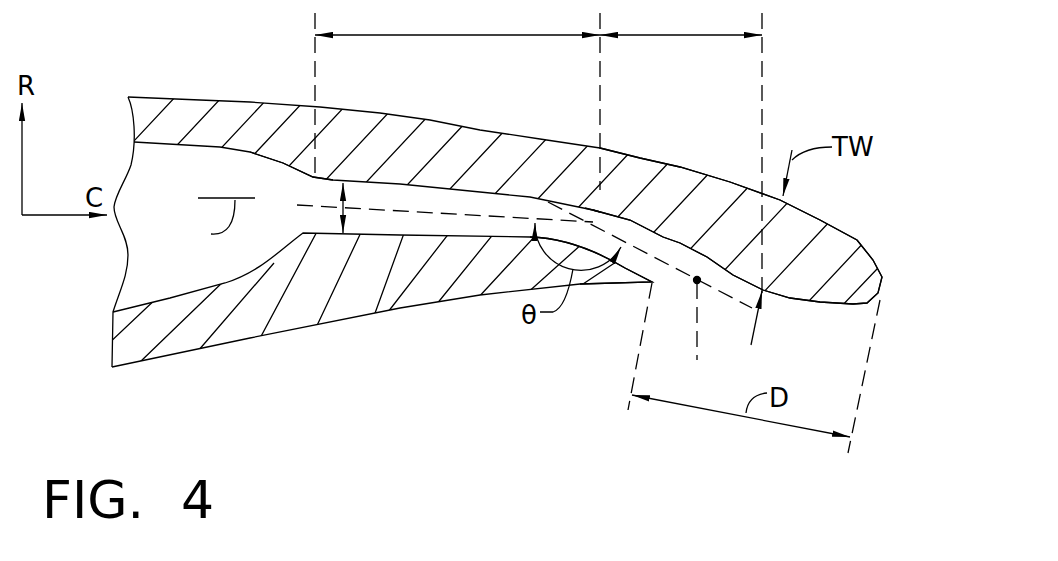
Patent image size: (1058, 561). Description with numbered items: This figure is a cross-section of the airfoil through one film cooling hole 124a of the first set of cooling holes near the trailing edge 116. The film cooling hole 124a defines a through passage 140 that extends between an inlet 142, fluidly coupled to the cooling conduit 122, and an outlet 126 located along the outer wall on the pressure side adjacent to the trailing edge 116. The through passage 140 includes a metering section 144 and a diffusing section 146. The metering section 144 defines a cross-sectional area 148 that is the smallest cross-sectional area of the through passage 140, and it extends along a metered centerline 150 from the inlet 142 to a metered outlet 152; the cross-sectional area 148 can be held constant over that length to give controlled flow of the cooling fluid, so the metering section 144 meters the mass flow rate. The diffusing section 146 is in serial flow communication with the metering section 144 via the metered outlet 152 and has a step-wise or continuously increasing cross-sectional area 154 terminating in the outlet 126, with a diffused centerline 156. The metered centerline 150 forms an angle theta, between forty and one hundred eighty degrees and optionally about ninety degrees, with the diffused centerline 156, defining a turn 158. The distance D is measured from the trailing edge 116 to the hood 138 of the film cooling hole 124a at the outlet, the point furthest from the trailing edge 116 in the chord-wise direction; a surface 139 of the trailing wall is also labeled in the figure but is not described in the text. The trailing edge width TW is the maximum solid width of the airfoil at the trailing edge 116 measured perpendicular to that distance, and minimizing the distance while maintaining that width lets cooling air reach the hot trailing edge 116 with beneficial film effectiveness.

The trailing edge 116 is at (882, 286).
The cooling conduit 122 is at (179, 213).
The film cooling hole 124a is at (662, 222).
The outlet 126 is at (681, 275).
The hood 138 is at (652, 284).
The inner surface of trailing wall 139 is at (699, 280).
The through passage 140 is at (430, 196).
The inlet 142 is at (314, 197).
The metering section 144 is at (457, 35).
The diffusing section 146 is at (680, 35).
The cross-sectional area 148 is at (346, 184).
The metered centerline 150 is at (470, 212).
The metered outlet 152 is at (615, 208).
The increasing cross-sectional area 154 is at (645, 260).
The diffused centerline 156 is at (705, 335).
The turn 158 is at (592, 209).